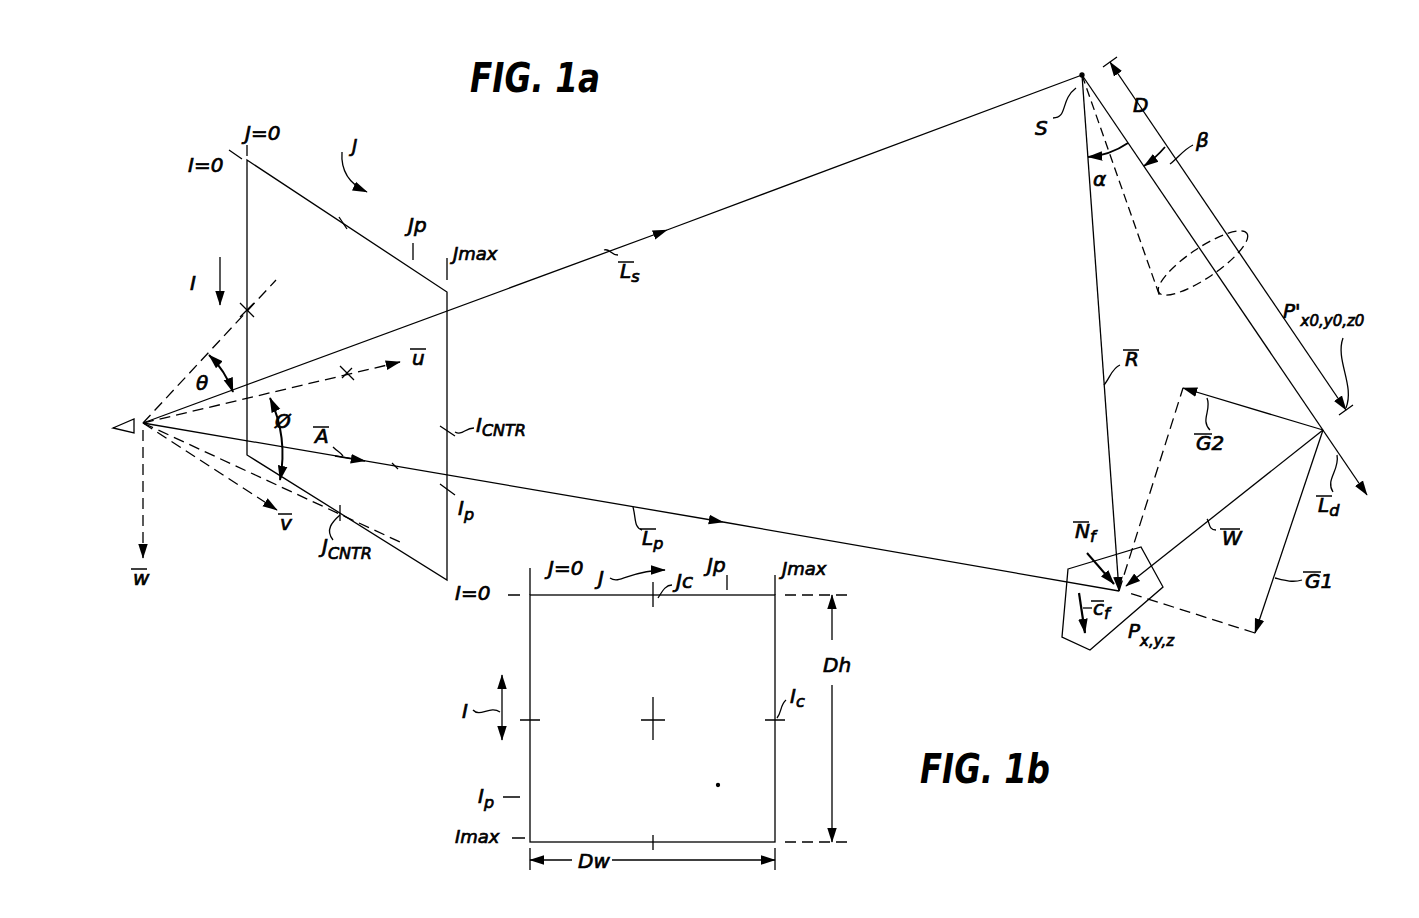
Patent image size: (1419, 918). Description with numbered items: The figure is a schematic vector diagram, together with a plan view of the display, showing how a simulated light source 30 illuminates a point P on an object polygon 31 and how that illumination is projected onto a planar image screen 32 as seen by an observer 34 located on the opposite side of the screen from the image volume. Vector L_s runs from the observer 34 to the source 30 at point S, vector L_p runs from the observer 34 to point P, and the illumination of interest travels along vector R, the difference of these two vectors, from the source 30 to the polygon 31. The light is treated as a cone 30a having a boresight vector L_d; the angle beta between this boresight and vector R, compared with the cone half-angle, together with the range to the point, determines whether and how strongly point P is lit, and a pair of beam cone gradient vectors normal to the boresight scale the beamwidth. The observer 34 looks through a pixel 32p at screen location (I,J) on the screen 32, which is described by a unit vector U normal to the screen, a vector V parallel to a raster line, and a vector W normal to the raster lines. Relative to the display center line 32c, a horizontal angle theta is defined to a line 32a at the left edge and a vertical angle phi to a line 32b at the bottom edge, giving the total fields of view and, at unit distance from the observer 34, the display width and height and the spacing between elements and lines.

In FIG. 1A, the source 30 is at (1079, 75).
In FIG. 1A, the cone 30a is at (1208, 203).
In FIG. 1A, the object polygon 31 is at (1065, 614).
In FIG. 1A, the image screen 32 is at (448, 565).
In FIG. 1B, the image screen 32 is at (777, 797).
In FIG. 1A, the line to the left edge 32a is at (220, 340).
In FIG. 1A, the line to the bottom edge 32b is at (385, 533).
In FIG. 1A, the display center line 32c is at (350, 378).
In FIG. 1B, the display center line 32c is at (656, 716).
In FIG. 1A, the pixel 32p is at (394, 466).
In FIG. 1B, the pixel 32p is at (718, 785).
In FIG. 1A, the observer 34 is at (134, 424).